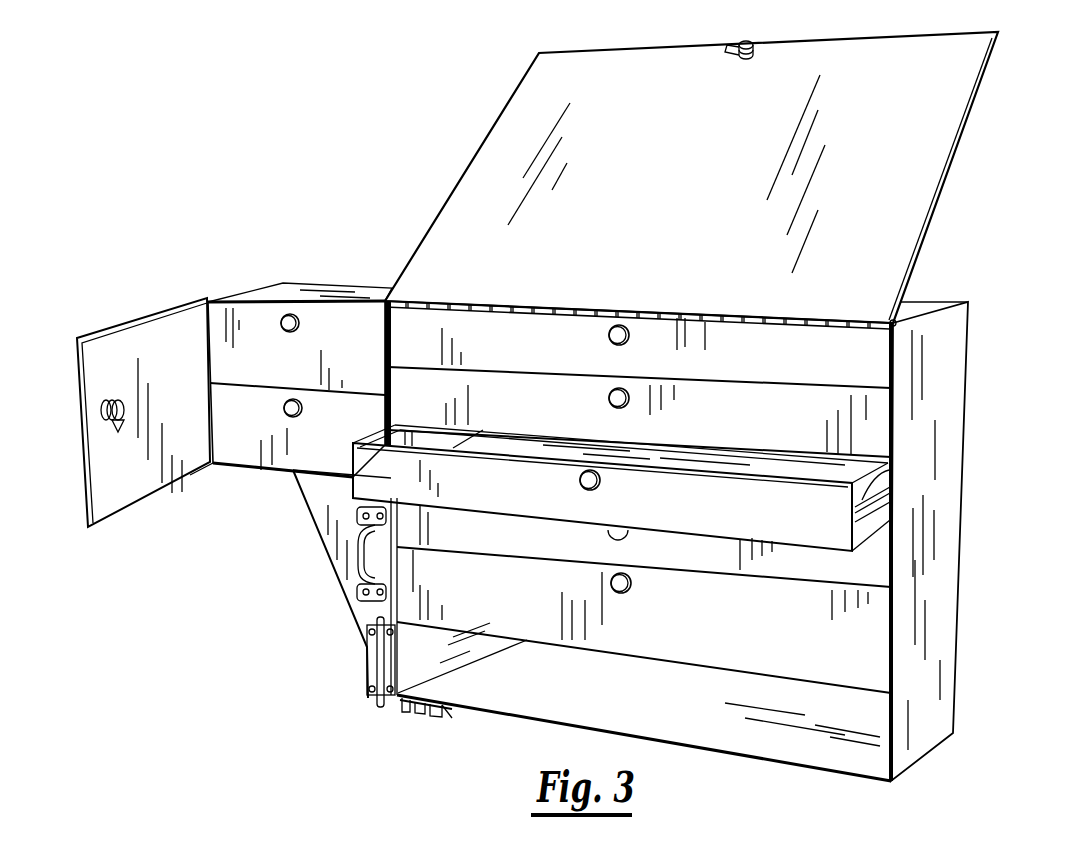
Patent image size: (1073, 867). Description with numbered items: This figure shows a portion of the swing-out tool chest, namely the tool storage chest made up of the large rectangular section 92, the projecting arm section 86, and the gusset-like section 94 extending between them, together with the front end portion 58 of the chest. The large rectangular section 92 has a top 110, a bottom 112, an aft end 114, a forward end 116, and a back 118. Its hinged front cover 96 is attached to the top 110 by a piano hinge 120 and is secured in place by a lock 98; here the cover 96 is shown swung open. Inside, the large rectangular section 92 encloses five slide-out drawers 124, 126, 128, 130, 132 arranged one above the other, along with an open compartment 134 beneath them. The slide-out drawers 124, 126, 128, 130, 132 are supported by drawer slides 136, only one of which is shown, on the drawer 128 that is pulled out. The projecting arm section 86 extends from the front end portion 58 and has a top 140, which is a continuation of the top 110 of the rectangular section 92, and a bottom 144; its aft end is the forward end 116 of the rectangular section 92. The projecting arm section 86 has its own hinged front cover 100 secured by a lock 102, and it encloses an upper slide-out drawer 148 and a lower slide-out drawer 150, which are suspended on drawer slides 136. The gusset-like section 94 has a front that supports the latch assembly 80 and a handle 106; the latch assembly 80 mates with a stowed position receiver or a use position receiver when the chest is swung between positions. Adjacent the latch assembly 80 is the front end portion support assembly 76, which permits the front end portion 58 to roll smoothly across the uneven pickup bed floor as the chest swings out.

The front end portion 58 is at (384, 278).
The front end portion support assembly 76 is at (443, 726).
The latch assembly 80 is at (351, 681).
The projecting arm section 86 is at (224, 283).
The large rectangular section 92 is at (996, 467).
The gusset-like section 94 is at (314, 511).
The hinged front cover 96 is at (977, 117).
The lock 98 is at (742, 60).
The hinged front cover 100 is at (76, 356).
The lock 102 is at (100, 413).
The handle 106 is at (352, 560).
The top 110 is at (938, 303).
The bottom 112 is at (650, 705).
The aft end 114 is at (972, 340).
The forward end 116 is at (433, 659).
The back 118 is at (970, 596).
The piano hinge 120 is at (678, 303).
The slide-out drawer 124 is at (760, 362).
The slide-out drawer 126 is at (760, 430).
The slide-out drawer 128 is at (762, 518).
The slide-out drawer 130 is at (734, 564).
The slide-out drawer 132 is at (734, 629).
The open compartment 134 is at (772, 752).
The drawer slide 136 is at (896, 463).
The top 140 is at (300, 286).
The bottom 144 is at (262, 478).
The upper slide-out drawer 148 is at (288, 370).
The lower slide-out drawer 150 is at (259, 427).